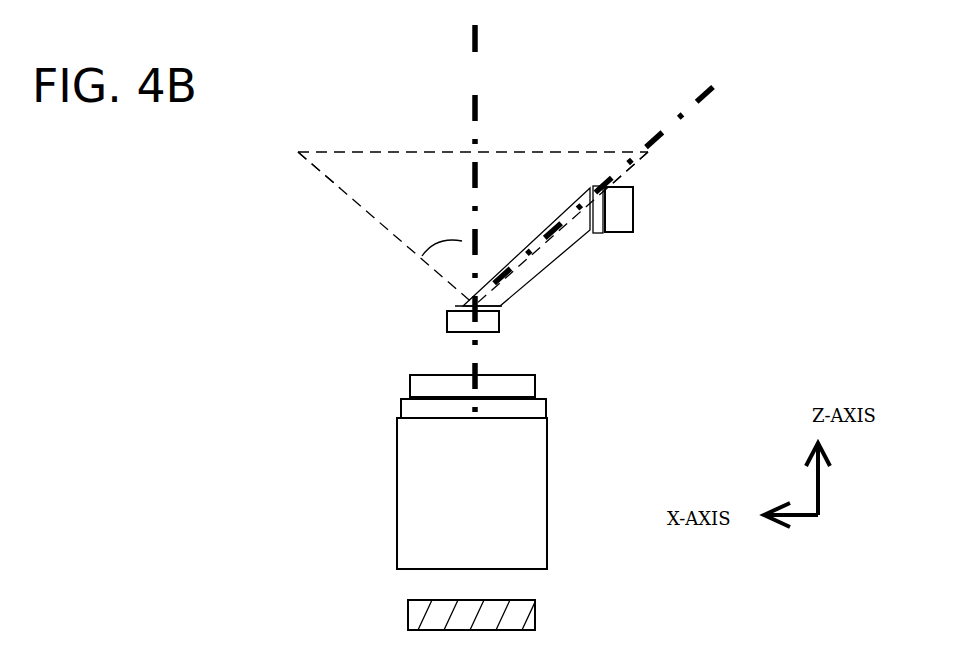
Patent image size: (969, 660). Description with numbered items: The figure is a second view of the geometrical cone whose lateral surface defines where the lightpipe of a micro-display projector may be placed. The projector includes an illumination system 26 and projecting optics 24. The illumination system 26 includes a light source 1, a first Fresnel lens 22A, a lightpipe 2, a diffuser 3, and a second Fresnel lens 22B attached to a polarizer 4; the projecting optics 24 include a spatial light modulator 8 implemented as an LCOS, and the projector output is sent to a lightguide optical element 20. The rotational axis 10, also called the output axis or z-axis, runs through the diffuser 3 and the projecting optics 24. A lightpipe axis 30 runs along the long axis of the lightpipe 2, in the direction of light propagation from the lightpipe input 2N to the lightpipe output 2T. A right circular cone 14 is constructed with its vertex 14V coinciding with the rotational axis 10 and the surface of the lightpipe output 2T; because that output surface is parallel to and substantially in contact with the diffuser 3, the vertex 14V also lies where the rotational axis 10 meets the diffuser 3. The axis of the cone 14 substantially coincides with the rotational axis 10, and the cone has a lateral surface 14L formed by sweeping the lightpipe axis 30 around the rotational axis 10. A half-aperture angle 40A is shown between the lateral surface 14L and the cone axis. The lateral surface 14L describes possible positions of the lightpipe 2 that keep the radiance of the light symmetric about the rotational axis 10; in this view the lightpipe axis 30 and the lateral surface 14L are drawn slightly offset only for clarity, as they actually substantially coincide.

The rotational axis 10 is at (474, 221).
The right circular cone 14 is at (473, 228).
The lateral surface 14L is at (310, 162).
The vertex 14V is at (458, 304).
The half-aperture angle 40A is at (449, 261).
The diffuser 3 is at (473, 322).
The lightpipe axis 30 is at (596, 191).
The lightpipe 2 is at (545, 270).
The lightpipe input 2N is at (586, 245).
The lightpipe output 2T is at (510, 309).
The first Fresnel lens 22A is at (598, 235).
The light source 1 is at (633, 208).
The illumination system 26 is at (780, 247).
The second Fresnel lens 22B is at (472, 386).
The polarizer 4 is at (473, 409).
The spatial light modulator 8 is at (472, 493).
The projecting optics 24 is at (607, 432).
The lightguide optical element 20 is at (472, 615).